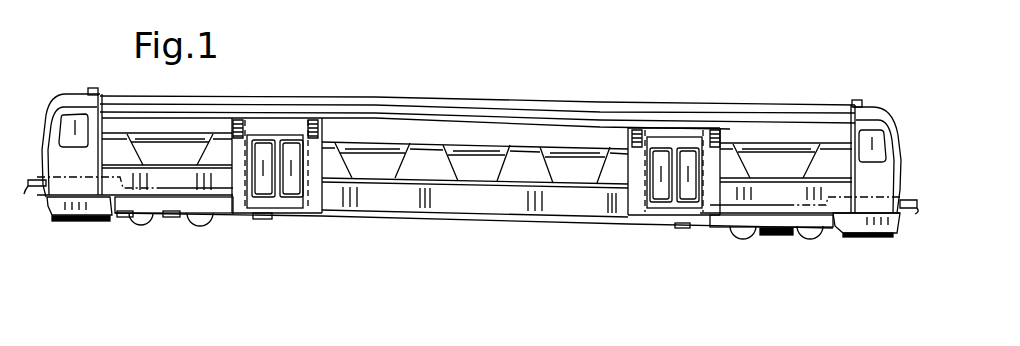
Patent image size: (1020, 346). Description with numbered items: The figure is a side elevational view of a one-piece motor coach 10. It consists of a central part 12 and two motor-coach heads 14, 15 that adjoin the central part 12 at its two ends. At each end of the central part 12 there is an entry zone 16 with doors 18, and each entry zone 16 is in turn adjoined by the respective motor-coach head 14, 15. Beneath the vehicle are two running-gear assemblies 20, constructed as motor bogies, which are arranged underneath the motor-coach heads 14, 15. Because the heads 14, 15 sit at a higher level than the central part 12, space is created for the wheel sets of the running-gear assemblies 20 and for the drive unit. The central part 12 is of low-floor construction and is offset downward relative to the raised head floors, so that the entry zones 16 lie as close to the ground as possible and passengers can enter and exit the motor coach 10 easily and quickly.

The motor coach 10 is at (90, 330).
The central part 12 is at (422, 218).
The motor-coach head 14 is at (43, 207).
The motor-coach head 15 is at (885, 240).
The entry zone 16 is at (290, 218).
The door 18 is at (250, 218).
The running-gear assembly 20 is at (150, 226).